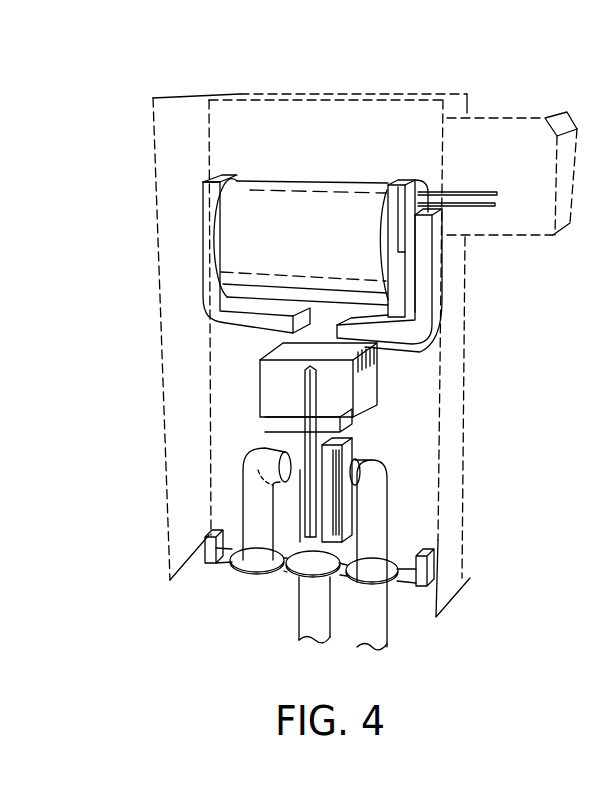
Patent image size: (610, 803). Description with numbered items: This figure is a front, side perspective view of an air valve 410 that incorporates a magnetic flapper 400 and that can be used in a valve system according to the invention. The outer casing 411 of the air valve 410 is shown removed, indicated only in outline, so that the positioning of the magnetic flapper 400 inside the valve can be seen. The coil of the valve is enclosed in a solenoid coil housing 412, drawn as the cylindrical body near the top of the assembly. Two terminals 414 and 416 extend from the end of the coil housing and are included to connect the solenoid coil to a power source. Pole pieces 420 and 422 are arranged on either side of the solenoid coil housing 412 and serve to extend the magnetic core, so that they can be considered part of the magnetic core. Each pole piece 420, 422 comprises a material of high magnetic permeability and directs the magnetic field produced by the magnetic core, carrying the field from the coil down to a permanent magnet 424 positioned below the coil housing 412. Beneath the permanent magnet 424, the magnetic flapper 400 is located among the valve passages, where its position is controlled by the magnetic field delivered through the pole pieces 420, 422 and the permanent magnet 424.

The magnetic flapper 400 is at (345, 473).
The air valve 410 is at (443, 95).
The outer casing 411 is at (157, 208).
The solenoid coil housing 412 is at (280, 181).
The terminal 414 is at (470, 193).
The terminal 416 is at (476, 209).
The pole piece 420 is at (237, 321).
The pole piece 422 is at (425, 262).
The permanent magnet 424 is at (260, 375).